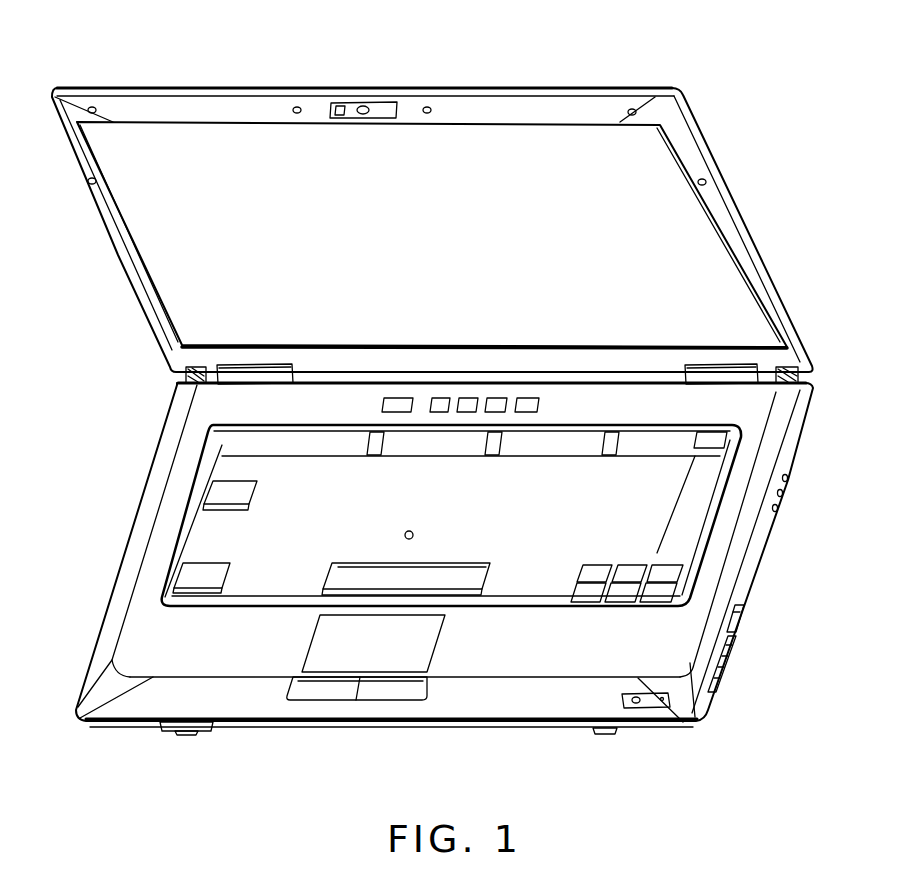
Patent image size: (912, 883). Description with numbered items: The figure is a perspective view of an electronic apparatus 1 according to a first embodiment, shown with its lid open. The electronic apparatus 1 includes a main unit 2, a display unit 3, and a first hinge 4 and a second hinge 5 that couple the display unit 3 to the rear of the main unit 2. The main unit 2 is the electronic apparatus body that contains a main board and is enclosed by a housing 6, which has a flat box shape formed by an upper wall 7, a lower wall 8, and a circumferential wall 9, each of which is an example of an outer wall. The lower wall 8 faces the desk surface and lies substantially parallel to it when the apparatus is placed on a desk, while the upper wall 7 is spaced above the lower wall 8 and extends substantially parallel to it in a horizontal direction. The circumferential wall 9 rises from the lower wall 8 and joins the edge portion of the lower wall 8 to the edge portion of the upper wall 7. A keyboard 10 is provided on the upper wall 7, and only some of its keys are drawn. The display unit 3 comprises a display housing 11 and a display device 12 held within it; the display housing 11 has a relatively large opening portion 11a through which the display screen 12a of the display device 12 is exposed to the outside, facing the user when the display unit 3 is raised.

The electronic apparatus 1 is at (430, 398).
The main unit 2 is at (438, 582).
The display unit 3 is at (430, 193).
The first hinge 4 is at (252, 370).
The second hinge 5 is at (712, 370).
The housing 6 is at (137, 633).
The upper wall 7 is at (505, 658).
The lower wall 8 is at (745, 618).
The circumferential wall 9 is at (725, 672).
The keyboard 10 is at (596, 598).
The display housing 11 is at (486, 86).
The opening portion 11a is at (243, 127).
The display device 12 is at (448, 168).
The display screen 12a is at (446, 218).